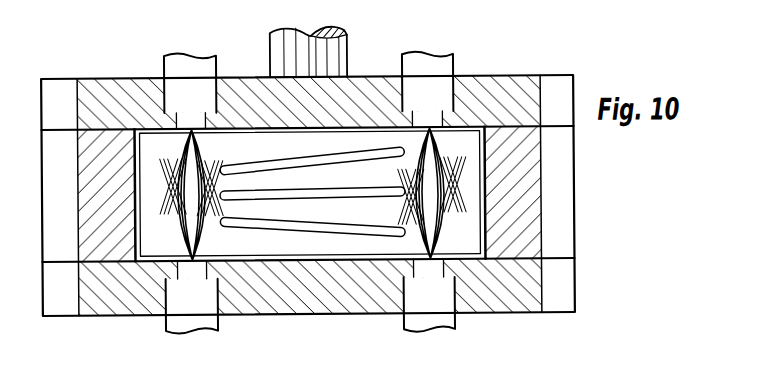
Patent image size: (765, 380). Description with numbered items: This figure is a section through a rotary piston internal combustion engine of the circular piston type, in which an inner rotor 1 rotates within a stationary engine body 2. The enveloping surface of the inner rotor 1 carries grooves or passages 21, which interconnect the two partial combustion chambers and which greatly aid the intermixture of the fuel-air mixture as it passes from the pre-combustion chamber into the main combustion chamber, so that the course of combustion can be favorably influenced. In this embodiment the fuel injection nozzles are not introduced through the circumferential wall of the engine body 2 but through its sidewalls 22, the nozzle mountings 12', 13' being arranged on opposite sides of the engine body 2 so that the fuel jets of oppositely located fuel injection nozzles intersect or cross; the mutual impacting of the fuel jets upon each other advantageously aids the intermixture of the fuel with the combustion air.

The inner rotor 1 is at (288, 250).
The engine body 2 is at (530, 176).
The electrode block 12' is at (192, 197).
The electrode block 13' is at (453, 193).
The grooves or passages 21 is at (275, 163).
The sidewalls 22 is at (524, 85).